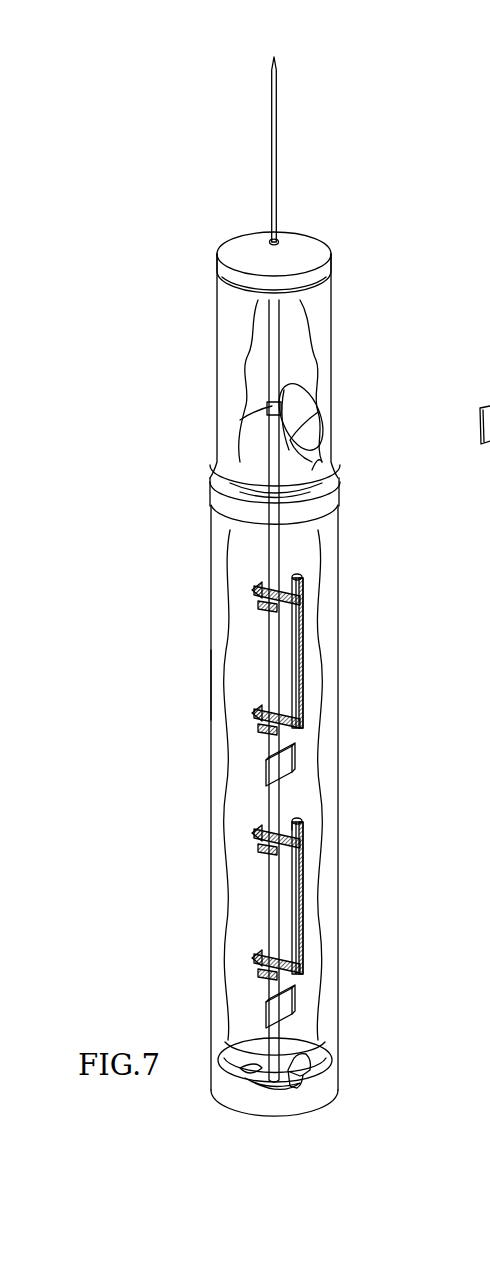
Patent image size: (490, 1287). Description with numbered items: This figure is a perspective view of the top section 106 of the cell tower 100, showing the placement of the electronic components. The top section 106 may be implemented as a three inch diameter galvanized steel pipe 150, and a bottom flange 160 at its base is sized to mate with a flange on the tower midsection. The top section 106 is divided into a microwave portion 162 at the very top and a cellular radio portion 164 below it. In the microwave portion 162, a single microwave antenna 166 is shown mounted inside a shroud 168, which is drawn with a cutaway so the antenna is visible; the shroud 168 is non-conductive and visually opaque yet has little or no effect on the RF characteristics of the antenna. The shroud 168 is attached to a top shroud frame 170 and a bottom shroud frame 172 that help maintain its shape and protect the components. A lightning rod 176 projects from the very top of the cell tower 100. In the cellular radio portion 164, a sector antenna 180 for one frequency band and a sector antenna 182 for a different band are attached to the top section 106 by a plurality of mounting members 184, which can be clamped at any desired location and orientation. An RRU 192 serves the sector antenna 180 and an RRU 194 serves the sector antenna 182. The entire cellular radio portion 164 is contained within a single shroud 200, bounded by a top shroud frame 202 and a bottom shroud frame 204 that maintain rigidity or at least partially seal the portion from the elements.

The cell tower 100 is at (128, 237).
The lightning rod 176 is at (277, 123).
The top shroud frame 170 is at (293, 228).
The shroud 168 is at (333, 295).
The microwave portion 162 is at (350, 316).
The microwave antenna 166 is at (305, 392).
The bottom shroud frame 172 is at (310, 468).
The top shroud frame 202 is at (338, 490).
The top section 106 is at (273, 665).
The mounting members 184 is at (262, 600).
The sector antenna 180 is at (303, 635).
The sector antenna 182 is at (300, 878).
The RRU 192 is at (290, 760).
The RRU 194 is at (295, 1005).
The shroud 200 is at (212, 683).
The cellular radio portion 164 is at (357, 788).
The galvanized steel pipe 150 is at (290, 805).
The bottom flange 160 is at (300, 1052).
The bottom shroud frame 204 is at (333, 1098).